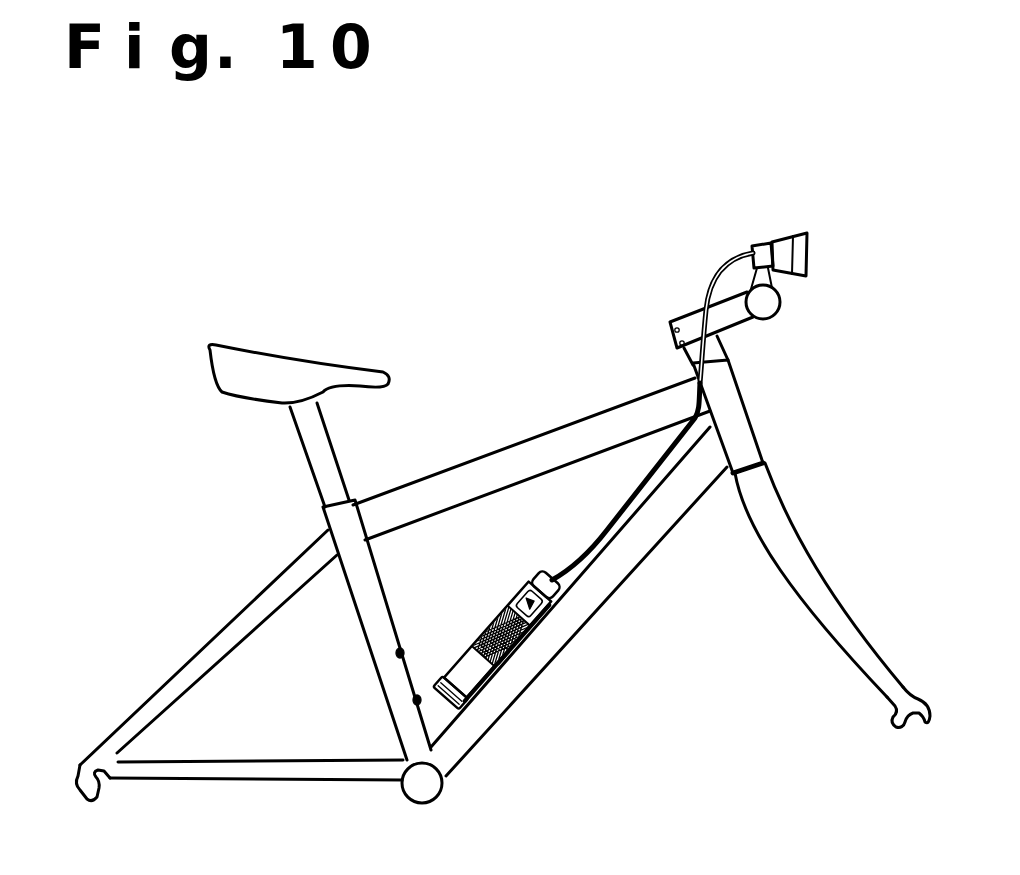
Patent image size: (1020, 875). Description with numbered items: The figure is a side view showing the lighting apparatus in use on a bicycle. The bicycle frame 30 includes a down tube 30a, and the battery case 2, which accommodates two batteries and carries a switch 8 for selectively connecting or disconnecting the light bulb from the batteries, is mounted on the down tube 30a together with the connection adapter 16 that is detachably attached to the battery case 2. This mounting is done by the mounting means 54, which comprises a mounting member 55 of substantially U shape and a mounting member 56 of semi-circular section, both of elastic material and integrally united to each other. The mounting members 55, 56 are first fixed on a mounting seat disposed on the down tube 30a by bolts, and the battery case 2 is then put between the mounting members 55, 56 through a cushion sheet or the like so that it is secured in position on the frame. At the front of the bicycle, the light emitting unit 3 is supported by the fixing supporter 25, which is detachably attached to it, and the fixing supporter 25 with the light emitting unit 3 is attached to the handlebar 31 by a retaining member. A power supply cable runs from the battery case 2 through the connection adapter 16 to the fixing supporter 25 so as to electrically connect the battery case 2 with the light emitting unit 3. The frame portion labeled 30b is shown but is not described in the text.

The battery case 2 is at (515, 578).
The light emitting unit 3 is at (797, 232).
The switch 8 is at (547, 627).
The connection adapter 16 is at (560, 591).
The fixing supporter 25 is at (757, 243).
The bicycle frame 30 is at (419, 472).
The down tube 30a is at (687, 511).
The seat tube 30b is at (403, 653).
The handlebar 31 is at (770, 301).
The mounting means 54 is at (438, 716).
The mounting member 55 is at (510, 657).
The mounting member 56 is at (468, 658).